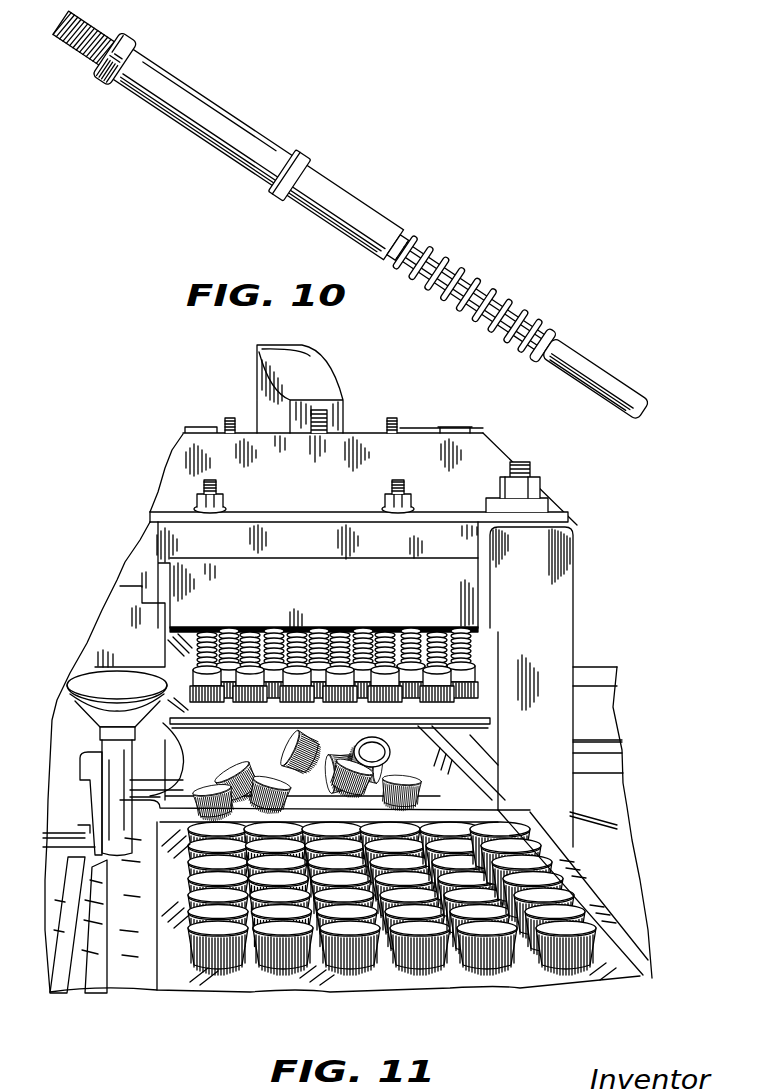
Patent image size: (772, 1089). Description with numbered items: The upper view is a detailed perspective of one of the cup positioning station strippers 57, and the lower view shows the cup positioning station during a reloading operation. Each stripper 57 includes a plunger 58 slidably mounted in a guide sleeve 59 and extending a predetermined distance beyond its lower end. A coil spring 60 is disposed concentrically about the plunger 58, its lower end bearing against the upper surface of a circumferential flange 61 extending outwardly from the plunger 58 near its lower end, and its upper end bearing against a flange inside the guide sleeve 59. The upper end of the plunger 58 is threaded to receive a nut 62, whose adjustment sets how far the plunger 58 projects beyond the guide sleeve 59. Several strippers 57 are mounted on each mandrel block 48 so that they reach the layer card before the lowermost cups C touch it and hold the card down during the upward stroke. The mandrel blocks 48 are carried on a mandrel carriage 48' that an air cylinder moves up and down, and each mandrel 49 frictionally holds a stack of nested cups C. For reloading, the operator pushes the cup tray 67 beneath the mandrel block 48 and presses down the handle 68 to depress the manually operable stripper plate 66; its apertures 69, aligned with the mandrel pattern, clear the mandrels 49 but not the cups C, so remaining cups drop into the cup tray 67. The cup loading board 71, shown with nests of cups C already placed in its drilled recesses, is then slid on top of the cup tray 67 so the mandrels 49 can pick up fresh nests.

In FIG. 10, the stripper 57 is at (262, 121).
In FIG. 10, the plunger 58 is at (594, 388).
In FIG. 10, the guide sleeve 59 is at (348, 205).
In FIG. 10, the coil spring 60 is at (497, 310).
In FIG. 10, the circumferential flange 61 is at (553, 350).
In FIG. 10, the nut 62 is at (128, 46).
In FIG. 11, the handle 68 is at (300, 377).
In FIG. 11, the mandrel block 48 is at (318, 577).
In FIG. 11, the mandrel carriage 48' is at (556, 687).
In FIG. 11, the mandrel 49 is at (437, 672).
In FIG. 11, the stripper plate 66 is at (455, 690).
In FIG. 11, the apertures 69 is at (225, 705).
In FIG. 11, the cup tray 67 is at (462, 775).
In FIG. 11, the cup loading board 71 is at (400, 978).
In FIG. 11, the cups C is at (510, 960).